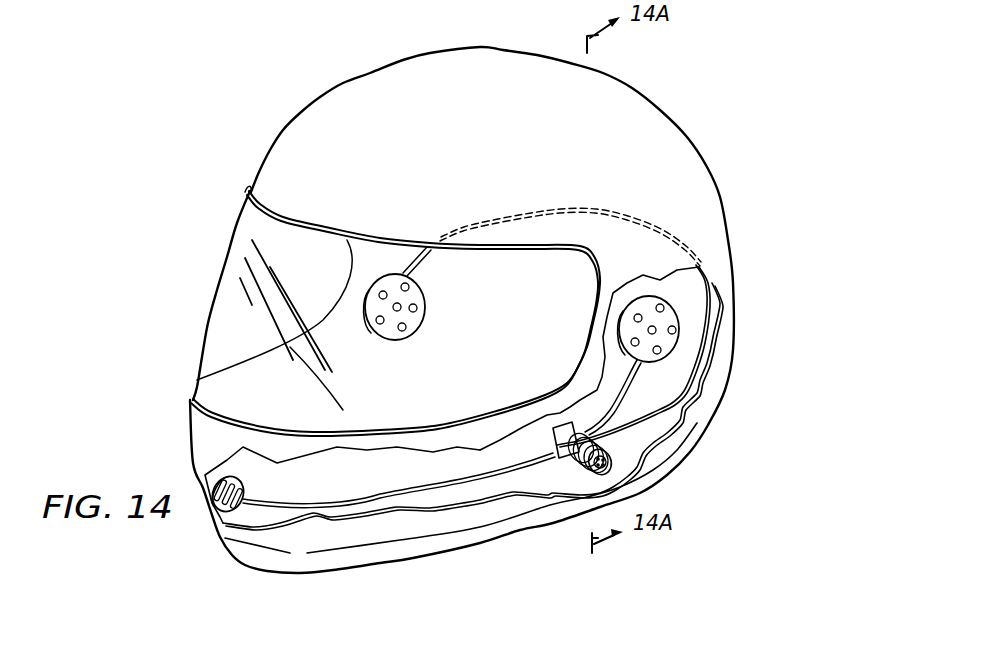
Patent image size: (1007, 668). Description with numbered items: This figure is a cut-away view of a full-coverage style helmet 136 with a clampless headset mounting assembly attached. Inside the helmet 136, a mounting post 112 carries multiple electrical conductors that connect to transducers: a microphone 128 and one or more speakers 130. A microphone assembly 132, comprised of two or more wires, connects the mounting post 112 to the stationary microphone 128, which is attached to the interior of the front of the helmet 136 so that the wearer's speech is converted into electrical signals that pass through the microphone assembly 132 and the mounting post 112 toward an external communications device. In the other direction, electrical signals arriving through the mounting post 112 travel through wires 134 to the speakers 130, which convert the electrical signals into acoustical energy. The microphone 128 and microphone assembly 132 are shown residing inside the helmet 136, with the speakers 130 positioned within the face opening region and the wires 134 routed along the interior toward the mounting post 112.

The helmet 136 is at (462, 310).
The speakers 130 is at (420, 323).
The wires 134 is at (423, 253).
The microphone assembly 132 is at (428, 483).
The microphone 128 is at (247, 477).
The mounting post 112 is at (610, 457).